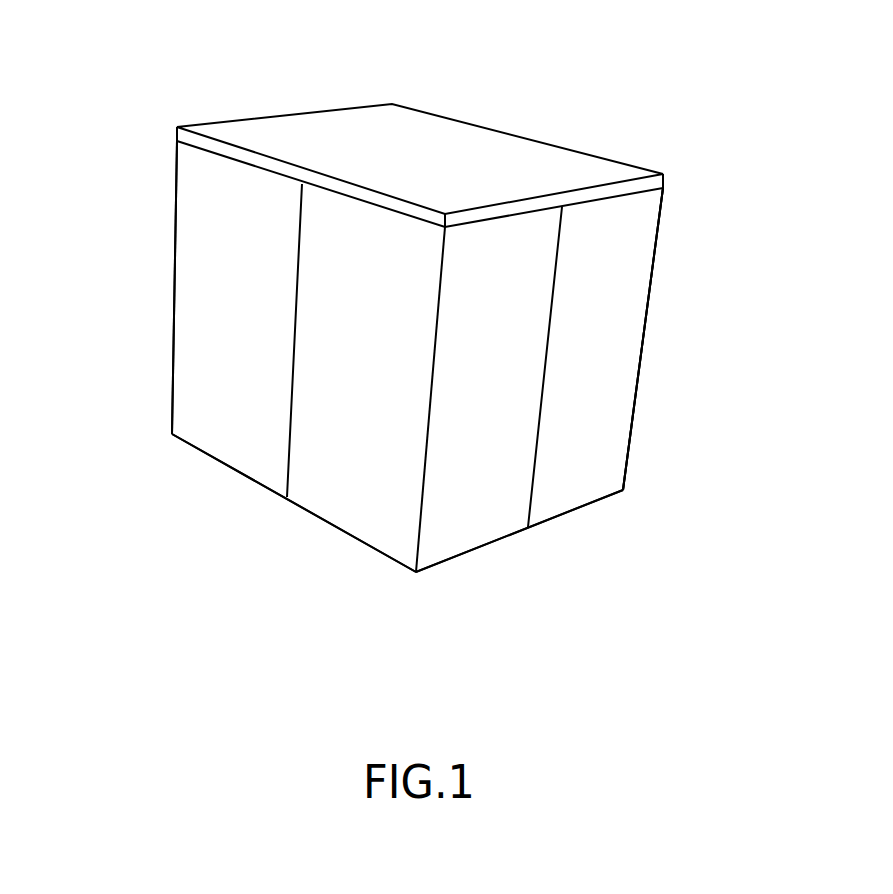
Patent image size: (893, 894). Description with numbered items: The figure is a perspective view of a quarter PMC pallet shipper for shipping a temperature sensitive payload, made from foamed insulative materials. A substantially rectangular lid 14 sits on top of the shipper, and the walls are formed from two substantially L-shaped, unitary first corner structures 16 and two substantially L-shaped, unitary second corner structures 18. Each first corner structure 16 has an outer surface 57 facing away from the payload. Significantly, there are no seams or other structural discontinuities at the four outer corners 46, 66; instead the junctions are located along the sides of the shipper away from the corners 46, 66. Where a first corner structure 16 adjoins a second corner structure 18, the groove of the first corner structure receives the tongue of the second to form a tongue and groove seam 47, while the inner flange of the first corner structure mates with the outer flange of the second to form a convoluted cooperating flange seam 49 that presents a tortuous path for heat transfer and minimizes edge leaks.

The lid 14 is at (488, 150).
The first corner structure 16 is at (213, 252).
The second corner structure 18 is at (362, 493).
The vertical corner 46 is at (173, 330).
The tongue and groove seam 47 is at (293, 373).
The cooperating flange seam 49 is at (538, 428).
The outer surface 57 is at (618, 403).
The outer corner 66 is at (424, 487).